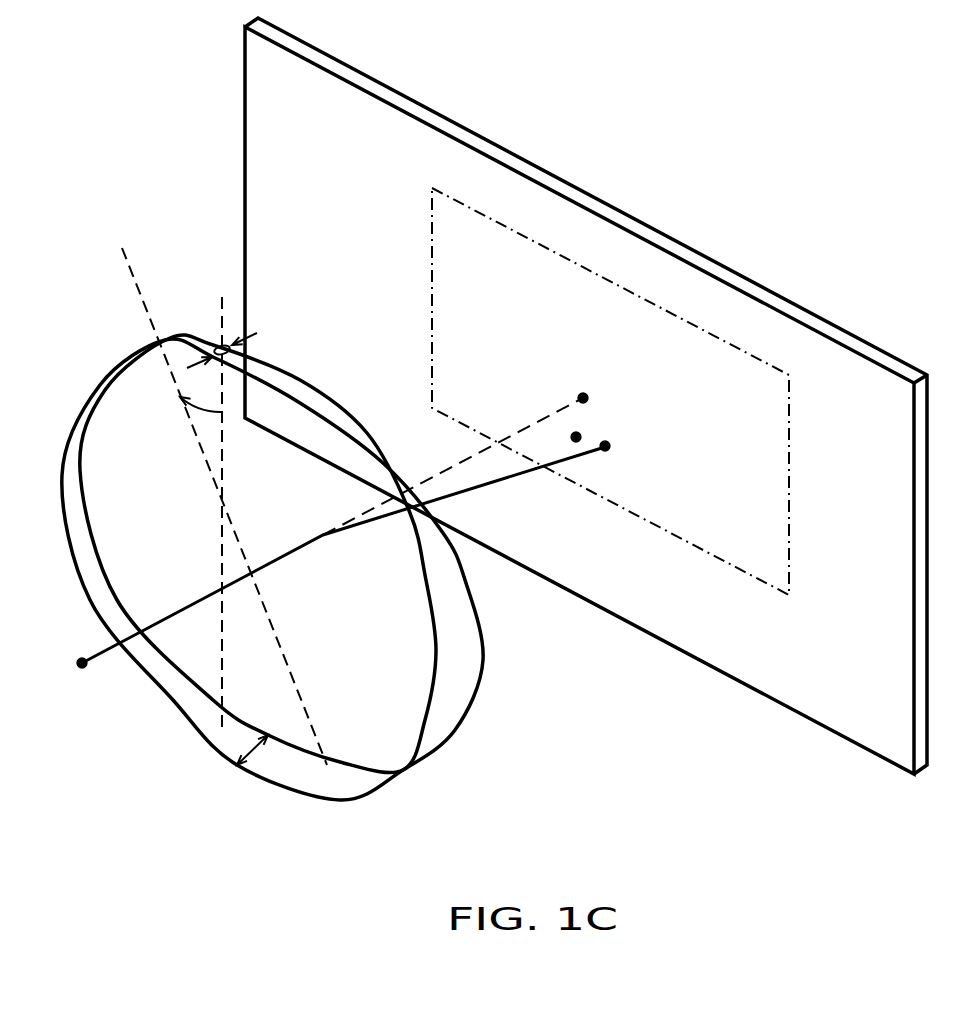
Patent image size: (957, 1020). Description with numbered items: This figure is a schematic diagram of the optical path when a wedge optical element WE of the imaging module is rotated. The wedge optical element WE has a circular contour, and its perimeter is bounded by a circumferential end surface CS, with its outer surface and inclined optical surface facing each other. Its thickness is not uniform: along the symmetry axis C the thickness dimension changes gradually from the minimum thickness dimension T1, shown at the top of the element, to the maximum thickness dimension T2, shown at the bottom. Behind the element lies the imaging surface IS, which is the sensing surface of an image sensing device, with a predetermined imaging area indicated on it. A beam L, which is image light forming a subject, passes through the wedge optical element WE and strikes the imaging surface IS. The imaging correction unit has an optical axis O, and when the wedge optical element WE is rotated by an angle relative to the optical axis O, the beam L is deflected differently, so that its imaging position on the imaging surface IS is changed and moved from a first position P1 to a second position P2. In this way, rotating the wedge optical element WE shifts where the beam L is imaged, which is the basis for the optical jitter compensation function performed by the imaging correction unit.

The imaging surface IS is at (720, 498).
The wedge optical element WE is at (302, 602).
The circumferential end surface CS is at (455, 693).
The symmetry axis C is at (222, 328).
The minimum thickness dimension T1 is at (212, 345).
The maximum thickness dimension T2 is at (257, 745).
The beam L is at (107, 658).
The optical axis O is at (538, 422).
The first position P1 is at (590, 397).
The second position P2 is at (612, 444).